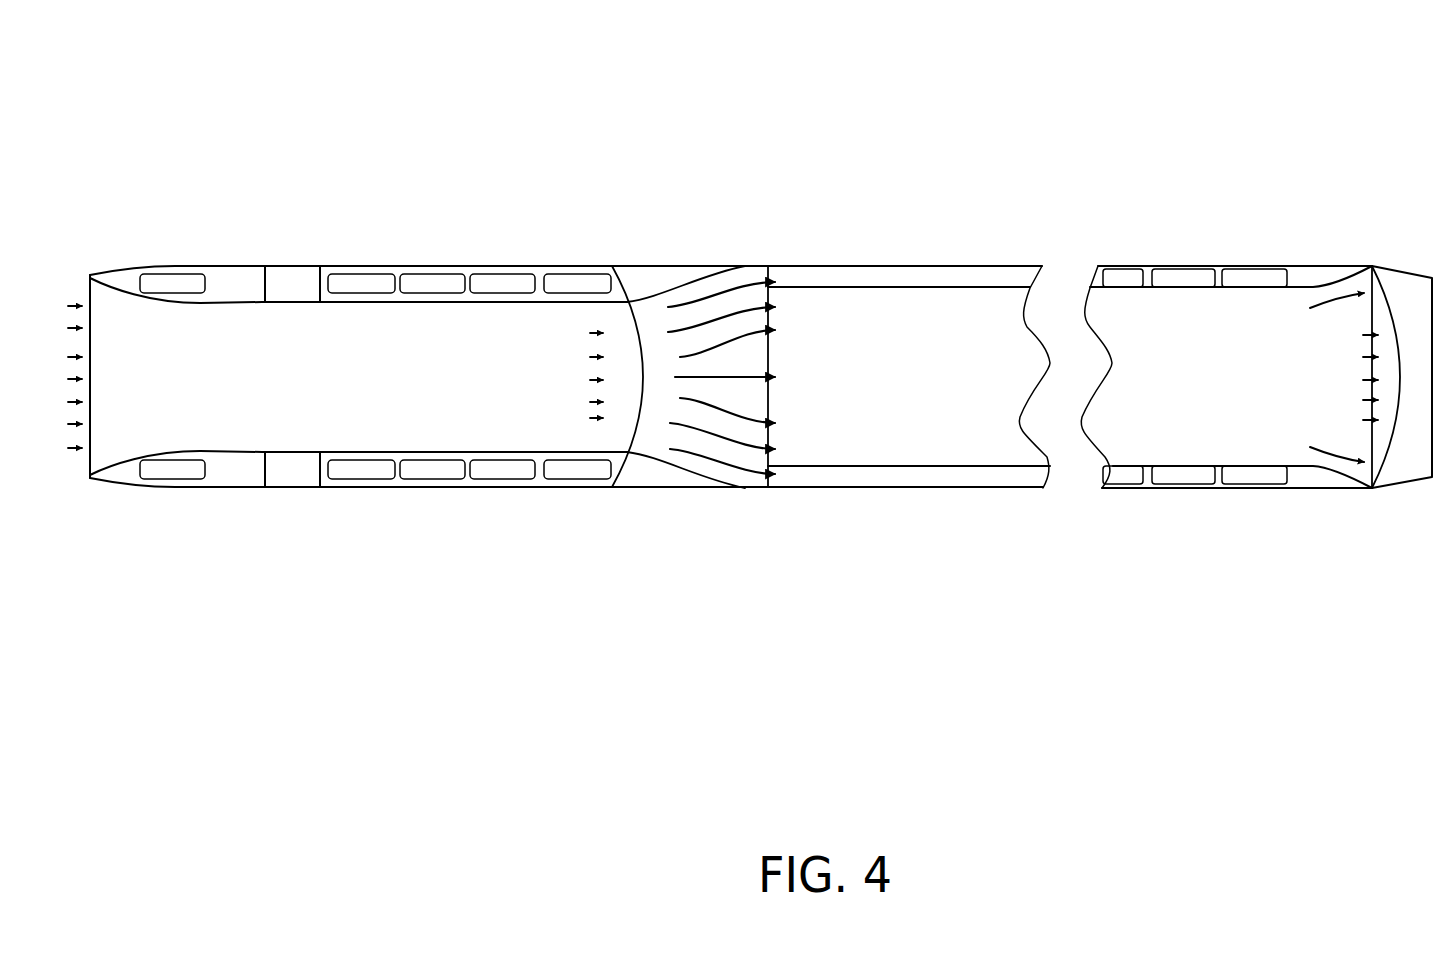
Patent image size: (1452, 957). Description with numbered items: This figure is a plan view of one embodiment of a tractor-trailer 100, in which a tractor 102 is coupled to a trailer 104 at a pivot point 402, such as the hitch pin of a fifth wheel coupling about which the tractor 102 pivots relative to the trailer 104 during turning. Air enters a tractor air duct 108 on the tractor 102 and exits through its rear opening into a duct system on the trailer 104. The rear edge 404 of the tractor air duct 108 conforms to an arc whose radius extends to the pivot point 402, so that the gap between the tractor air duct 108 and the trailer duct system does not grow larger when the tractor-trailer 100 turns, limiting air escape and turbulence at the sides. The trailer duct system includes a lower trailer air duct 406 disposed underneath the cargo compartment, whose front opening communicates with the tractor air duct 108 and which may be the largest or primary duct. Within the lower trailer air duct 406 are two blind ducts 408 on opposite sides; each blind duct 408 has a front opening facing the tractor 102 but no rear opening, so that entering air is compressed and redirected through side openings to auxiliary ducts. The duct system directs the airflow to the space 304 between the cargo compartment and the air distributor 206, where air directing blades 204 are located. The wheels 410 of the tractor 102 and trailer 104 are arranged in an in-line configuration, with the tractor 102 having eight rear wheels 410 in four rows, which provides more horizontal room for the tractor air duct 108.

The tractor-trailer 100 is at (272, 54).
The tractor 102 is at (620, 173).
The trailer 104 is at (1427, 173).
The tractor air duct 108 is at (277, 374).
The air directing blades 204 is at (1412, 268).
The air distributor 206 is at (1390, 450).
The space 304 is at (1382, 435).
The pivot point 402 is at (450, 376).
The rear edge 404 is at (632, 430).
The lower trailer air duct 406 is at (940, 377).
The blind duct 408 is at (993, 273).
The wheels 410 is at (523, 470).